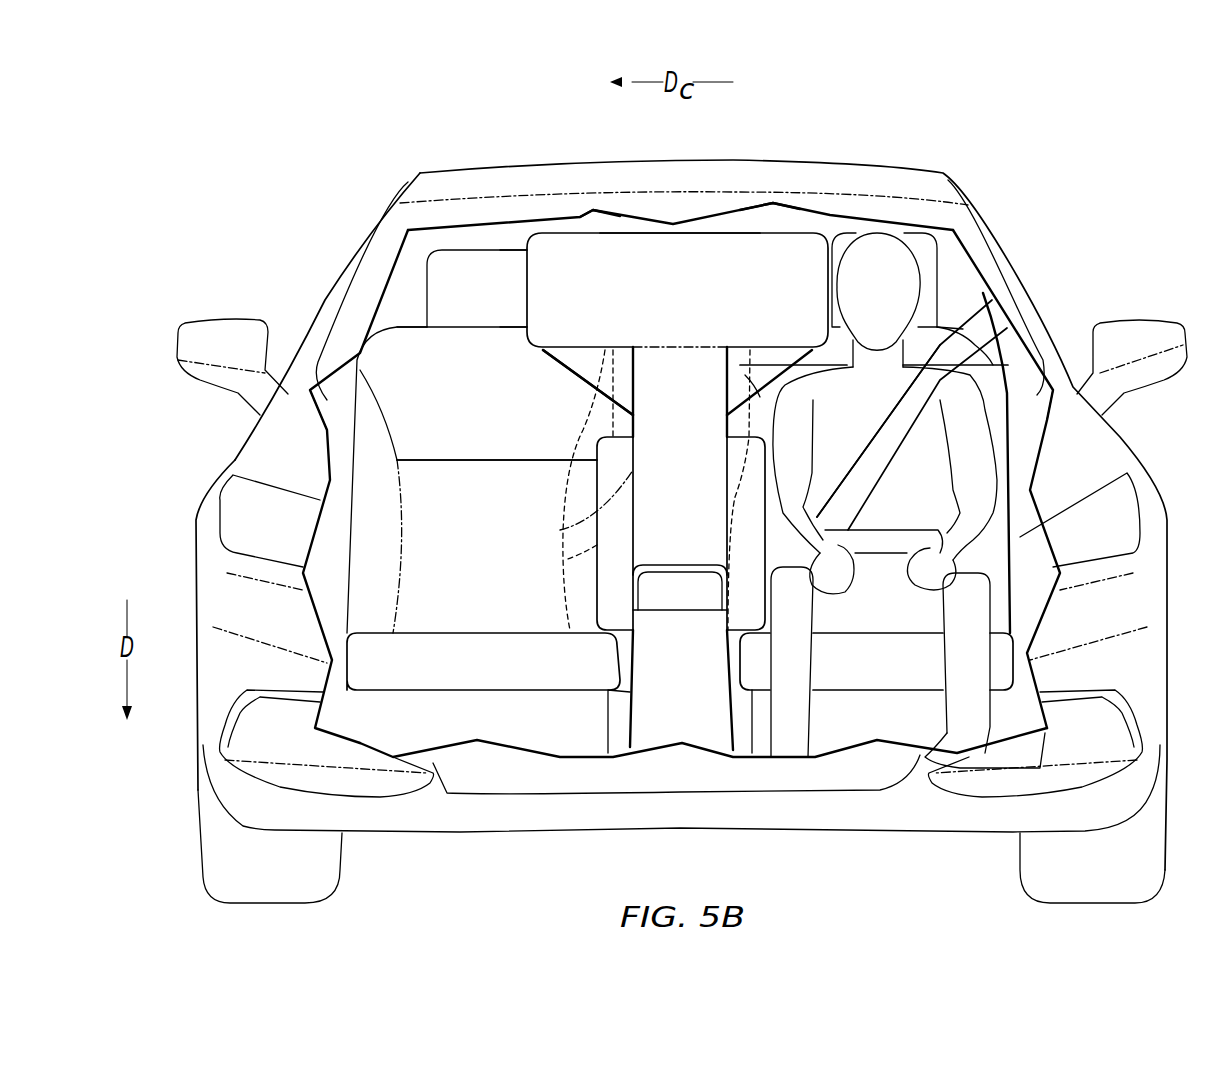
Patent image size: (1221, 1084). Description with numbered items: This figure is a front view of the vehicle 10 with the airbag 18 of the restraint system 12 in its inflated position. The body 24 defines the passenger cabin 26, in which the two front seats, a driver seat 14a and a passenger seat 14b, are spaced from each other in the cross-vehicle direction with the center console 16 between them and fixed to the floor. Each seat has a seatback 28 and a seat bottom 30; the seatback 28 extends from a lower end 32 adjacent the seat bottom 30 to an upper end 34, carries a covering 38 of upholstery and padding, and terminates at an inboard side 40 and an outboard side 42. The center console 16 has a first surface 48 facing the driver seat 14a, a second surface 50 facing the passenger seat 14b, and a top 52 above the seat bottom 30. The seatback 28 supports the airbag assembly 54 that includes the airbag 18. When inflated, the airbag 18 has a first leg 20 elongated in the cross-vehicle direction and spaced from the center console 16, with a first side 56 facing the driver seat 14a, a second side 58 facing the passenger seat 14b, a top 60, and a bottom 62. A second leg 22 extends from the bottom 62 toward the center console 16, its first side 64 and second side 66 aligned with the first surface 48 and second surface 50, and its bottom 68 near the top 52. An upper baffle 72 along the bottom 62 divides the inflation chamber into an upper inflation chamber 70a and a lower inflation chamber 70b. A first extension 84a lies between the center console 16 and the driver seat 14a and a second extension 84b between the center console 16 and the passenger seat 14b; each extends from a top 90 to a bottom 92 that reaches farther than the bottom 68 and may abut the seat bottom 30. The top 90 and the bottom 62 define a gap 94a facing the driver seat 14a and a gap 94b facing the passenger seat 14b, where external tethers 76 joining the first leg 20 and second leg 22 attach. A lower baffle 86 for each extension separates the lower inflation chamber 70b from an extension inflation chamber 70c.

The vehicle 10 is at (303, 170).
The restraint system 12 is at (797, 220).
The driver seat 14a is at (927, 243).
The passenger seat 14b is at (453, 240).
The center console 16 is at (623, 740).
The airbag 18 is at (593, 227).
The first leg 20 is at (713, 223).
The second leg 22 is at (633, 418).
The body 24 is at (187, 513).
The passenger cabin 26 is at (378, 261).
The seatback 28 is at (362, 352).
The seat bottom 30 is at (437, 700).
The lower end 32 is at (340, 593).
The upper end 34 is at (400, 323).
The covering 38 is at (445, 534).
The inboard side 40 is at (750, 430).
The outboard side 42 is at (343, 537).
The first surface 48 is at (748, 690).
The second surface 50 is at (630, 700).
The top 52 is at (680, 572).
The airbag assembly 54 is at (763, 220).
The first side 56 is at (840, 290).
The second side 58 is at (521, 273).
The top 60 is at (640, 233).
The bottom 62 is at (553, 358).
The first side 64 is at (742, 380).
The second side 66 is at (613, 418).
The bottom 68 is at (693, 563).
The upper inflation chamber 70a is at (630, 253).
The lower inflation chamber 70b is at (657, 500).
The extension inflation chamber 70c is at (620, 597).
The upper baffle 72 is at (703, 347).
The external tether 76 is at (560, 360).
The first extension 84a is at (823, 527).
The second extension 84b is at (597, 550).
The lower baffle 86 is at (633, 470).
The top 90 is at (580, 462).
The bottom 92 is at (610, 636).
The gap 94a is at (762, 412).
The gap 94b is at (560, 398).